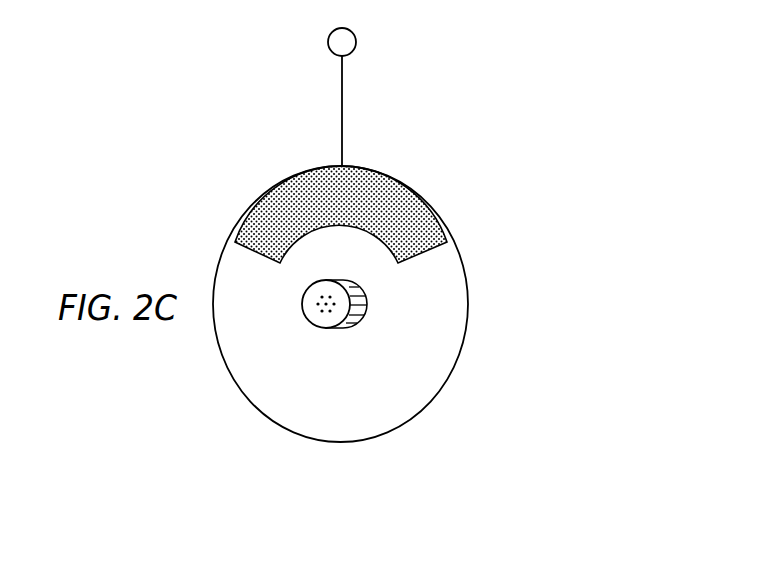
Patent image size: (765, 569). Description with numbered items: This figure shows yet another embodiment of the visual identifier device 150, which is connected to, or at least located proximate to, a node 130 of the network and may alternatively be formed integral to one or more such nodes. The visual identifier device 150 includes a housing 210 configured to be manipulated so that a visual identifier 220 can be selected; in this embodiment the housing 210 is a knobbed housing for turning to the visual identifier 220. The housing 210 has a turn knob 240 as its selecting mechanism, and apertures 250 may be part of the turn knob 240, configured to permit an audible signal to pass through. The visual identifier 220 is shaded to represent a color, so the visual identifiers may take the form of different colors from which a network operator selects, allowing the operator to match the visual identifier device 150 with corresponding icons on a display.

The node 130 is at (356, 42).
The visual identifier device 150 is at (479, 170).
The housing 210 is at (445, 305).
The visual identifier 220 is at (280, 207).
The turn knob 240 is at (340, 333).
The apertures 250 is at (321, 320).